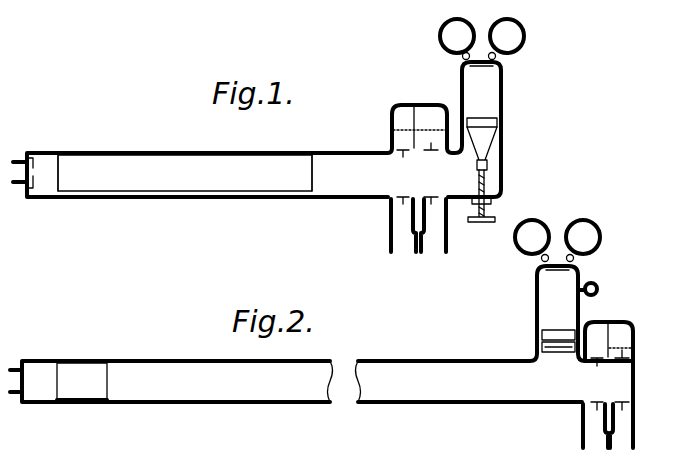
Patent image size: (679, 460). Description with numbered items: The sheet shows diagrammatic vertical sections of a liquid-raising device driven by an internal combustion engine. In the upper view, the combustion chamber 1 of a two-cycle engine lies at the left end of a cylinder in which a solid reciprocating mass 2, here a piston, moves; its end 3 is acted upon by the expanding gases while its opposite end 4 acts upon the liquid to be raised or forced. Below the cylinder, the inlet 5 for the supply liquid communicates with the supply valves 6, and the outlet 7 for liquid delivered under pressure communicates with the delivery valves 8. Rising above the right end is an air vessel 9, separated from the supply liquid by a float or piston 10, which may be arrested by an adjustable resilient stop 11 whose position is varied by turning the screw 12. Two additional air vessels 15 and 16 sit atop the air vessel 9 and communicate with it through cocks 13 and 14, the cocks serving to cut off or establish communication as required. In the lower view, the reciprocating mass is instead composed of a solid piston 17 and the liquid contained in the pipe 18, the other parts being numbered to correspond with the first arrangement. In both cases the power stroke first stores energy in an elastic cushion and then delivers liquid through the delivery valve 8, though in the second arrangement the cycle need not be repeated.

In FIG. 1, the combustion chamber 1 is at (43, 163).
In FIG. 2, the combustion chamber 1 is at (40, 370).
In FIG. 1, the solid reciprocating mass 2 is at (185, 173).
In FIG. 1, the end of the piston 3 is at (58, 172).
In FIG. 1, the end of the piston 4 is at (313, 168).
In FIG. 1, the inlet 5 is at (402, 243).
In FIG. 2, the inlet 5 is at (595, 426).
In FIG. 1, the supply valves 6 is at (400, 198).
In FIG. 2, the supply valves 6 is at (596, 402).
In FIG. 1, the outlet 7 is at (430, 241).
In FIG. 2, the outlet 7 is at (611, 426).
In FIG. 1, the delivery valves 8 is at (429, 198).
In FIG. 2, the delivery valves 8 is at (620, 402).
In FIG. 1, the air vessel 9 is at (481, 83).
In FIG. 2, the air vessel 9 is at (571, 287).
In FIG. 1, the float or piston 10 is at (484, 120).
In FIG. 2, the float or piston 10 is at (556, 334).
In FIG. 1, the adjustable resilient stop 11 is at (500, 133).
In FIG. 2, the adjustable resilient stop 11 is at (543, 348).
In FIG. 1, the screw 12 is at (487, 206).
In FIG. 1, the cock 13 is at (462, 58).
In FIG. 2, the cock 13 is at (545, 258).
In FIG. 1, the cock 14 is at (496, 58).
In FIG. 2, the cock 14 is at (570, 258).
In FIG. 1, the additional air vessel 15 is at (452, 36).
In FIG. 2, the additional air vessel 15 is at (530, 247).
In FIG. 1, the additional air vessel 16 is at (512, 37).
In FIG. 2, the additional air vessel 16 is at (590, 243).
In FIG. 2, the solid piston 17 is at (79, 384).
In FIG. 2, the pipe 18 is at (345, 385).